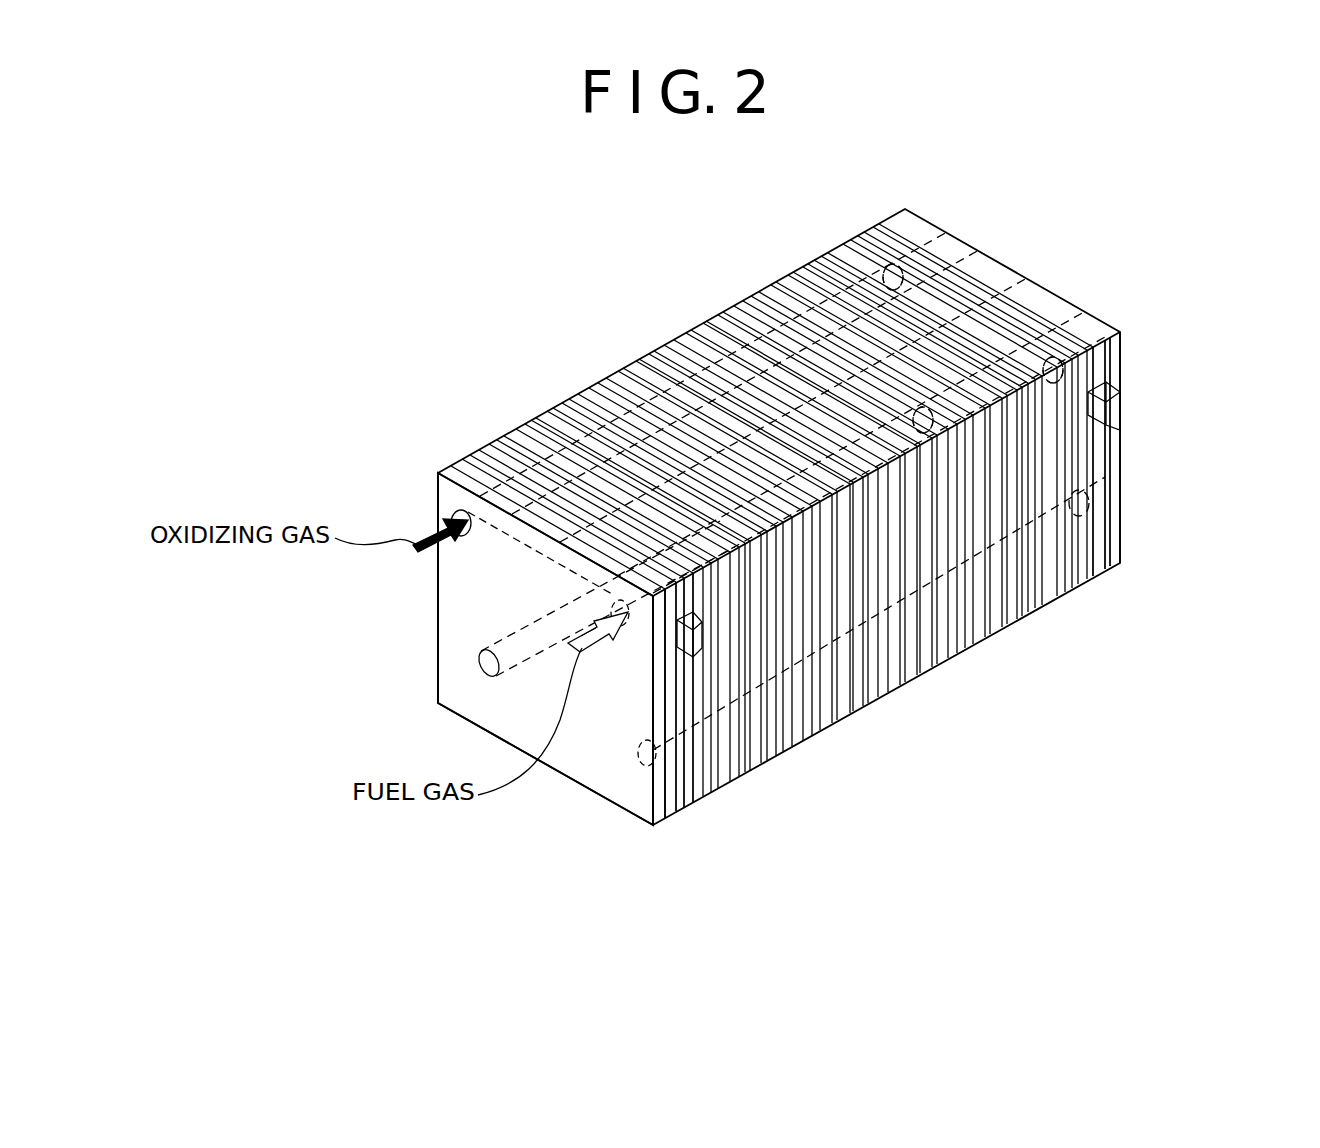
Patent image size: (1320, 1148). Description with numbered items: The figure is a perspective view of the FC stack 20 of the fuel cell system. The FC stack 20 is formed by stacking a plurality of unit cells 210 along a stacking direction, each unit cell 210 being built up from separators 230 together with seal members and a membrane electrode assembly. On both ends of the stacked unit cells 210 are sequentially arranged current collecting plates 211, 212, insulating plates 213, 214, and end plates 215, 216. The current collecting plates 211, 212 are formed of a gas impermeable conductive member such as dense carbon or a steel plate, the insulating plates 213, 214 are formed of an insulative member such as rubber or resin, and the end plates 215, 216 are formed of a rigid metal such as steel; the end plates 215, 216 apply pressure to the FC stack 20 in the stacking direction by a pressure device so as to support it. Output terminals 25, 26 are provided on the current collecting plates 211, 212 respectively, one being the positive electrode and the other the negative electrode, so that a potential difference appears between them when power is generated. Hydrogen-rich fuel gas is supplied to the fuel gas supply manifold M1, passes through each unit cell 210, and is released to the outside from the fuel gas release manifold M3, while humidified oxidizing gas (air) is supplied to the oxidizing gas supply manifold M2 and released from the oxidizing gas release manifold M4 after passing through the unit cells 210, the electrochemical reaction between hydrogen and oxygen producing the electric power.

The FC stack 20 is at (588, 294).
The unit cell 210 is at (602, 372).
The current collecting plate 211 is at (684, 812).
The current collecting plate 212 is at (1090, 578).
The insulating plate 213 is at (672, 818).
The insulating plate 214 is at (1103, 578).
The end plate 215 is at (659, 828).
The end plate 216 is at (1118, 556).
The separator 230 is at (975, 628).
The output terminal 25 is at (703, 647).
The output terminal 26 is at (1120, 408).
The fuel gas supply manifold M1 is at (1023, 370).
The oxidizing gas supply manifold M2 is at (808, 335).
The fuel gas release manifold M3 is at (525, 635).
The oxidizing gas release manifold M4 is at (875, 625).